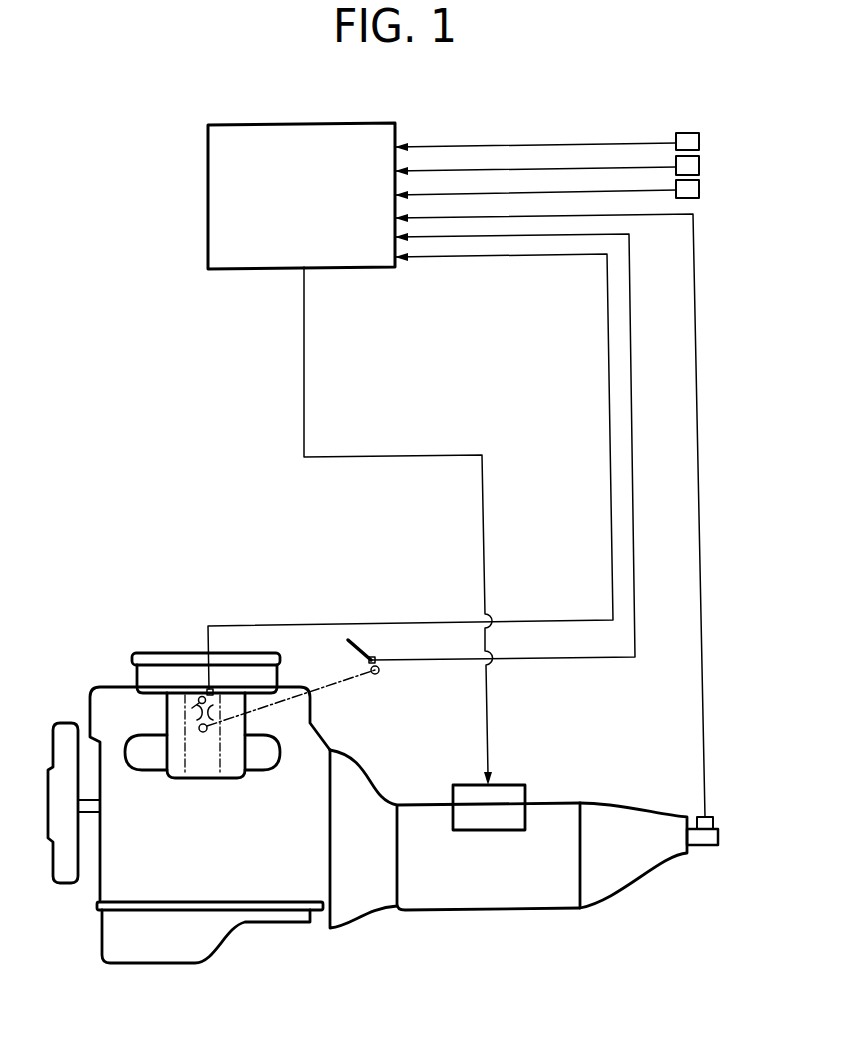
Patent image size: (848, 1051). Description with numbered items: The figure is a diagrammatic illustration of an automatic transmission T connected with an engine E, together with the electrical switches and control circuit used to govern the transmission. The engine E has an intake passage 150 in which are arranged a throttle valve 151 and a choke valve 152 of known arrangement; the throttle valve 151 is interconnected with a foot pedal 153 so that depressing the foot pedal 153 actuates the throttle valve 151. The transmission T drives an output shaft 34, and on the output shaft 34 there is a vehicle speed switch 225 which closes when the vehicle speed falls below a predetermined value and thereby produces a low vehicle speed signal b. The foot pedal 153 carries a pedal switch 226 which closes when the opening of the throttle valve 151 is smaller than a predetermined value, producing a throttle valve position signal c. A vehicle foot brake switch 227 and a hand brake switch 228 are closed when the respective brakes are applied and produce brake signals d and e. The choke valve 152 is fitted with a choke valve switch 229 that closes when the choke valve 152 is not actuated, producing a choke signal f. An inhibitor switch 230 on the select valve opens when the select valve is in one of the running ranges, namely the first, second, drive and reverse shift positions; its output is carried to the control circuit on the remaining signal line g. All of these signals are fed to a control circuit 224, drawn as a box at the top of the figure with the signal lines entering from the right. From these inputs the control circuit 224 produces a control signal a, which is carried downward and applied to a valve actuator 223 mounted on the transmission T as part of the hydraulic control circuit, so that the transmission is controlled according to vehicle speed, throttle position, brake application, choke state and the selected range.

The control circuit 224 is at (320, 123).
The inhibitor switch 230 is at (700, 138).
The hand brake switch 228 is at (700, 161).
The vehicle foot brake switch 227 is at (700, 190).
The choke valve switch 229 is at (206, 690).
The choke valve 152 is at (201, 698).
The throttle valve 151 is at (195, 737).
The intake passage 150 is at (198, 757).
The foot pedal 153 is at (352, 638).
The pedal switch 226 is at (376, 658).
The valve actuator 223 is at (503, 785).
The vehicle speed switch 225 is at (714, 818).
The output shaft 34 is at (697, 846).
The engine E is at (112, 876).
The automatic transmission T is at (557, 802).
The control signal a is at (485, 568).
The low vehicle speed signal b is at (702, 568).
The throttle valve position signal c is at (637, 568).
The brake signal d is at (662, 191).
The brake signal e is at (630, 167).
The choke signal f is at (612, 568).
The signal g is at (556, 143).